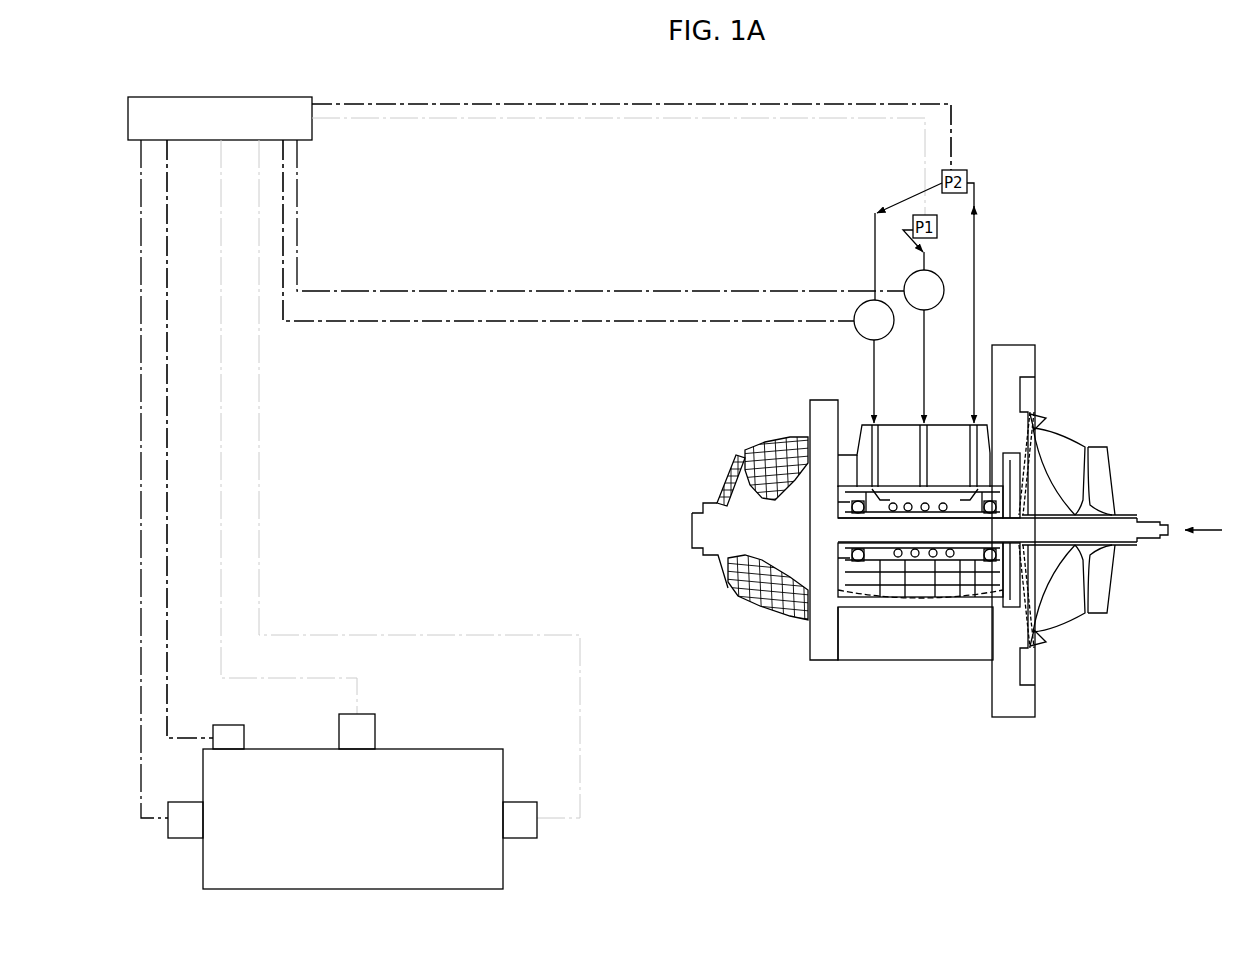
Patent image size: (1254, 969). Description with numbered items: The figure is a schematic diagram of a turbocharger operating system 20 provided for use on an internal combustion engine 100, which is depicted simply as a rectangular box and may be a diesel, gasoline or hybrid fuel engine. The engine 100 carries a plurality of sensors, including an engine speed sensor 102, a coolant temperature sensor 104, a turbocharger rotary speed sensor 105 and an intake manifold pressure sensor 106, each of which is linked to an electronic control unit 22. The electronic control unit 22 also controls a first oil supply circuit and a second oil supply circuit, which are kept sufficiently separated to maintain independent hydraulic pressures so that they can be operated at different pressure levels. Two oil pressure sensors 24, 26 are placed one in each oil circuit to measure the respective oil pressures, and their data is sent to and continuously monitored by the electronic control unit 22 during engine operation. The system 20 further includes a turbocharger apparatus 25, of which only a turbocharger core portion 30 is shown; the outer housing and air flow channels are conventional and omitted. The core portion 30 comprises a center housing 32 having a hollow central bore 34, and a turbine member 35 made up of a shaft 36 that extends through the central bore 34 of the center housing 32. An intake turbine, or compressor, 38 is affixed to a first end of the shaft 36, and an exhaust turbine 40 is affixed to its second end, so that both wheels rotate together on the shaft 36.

The turbocharger system 20 is at (1055, 275).
The electronic control unit 22 is at (265, 96).
The oil pressure sensor 24 is at (858, 336).
The turbocharger apparatus 25 is at (672, 540).
The oil pressure sensor 26 is at (935, 312).
The turbocharger core portion 30 is at (1085, 357).
The center housing 32 is at (1013, 531).
The hollow central bore 34 is at (830, 557).
The turbine member 35 is at (1218, 531).
The shaft 36 is at (1003, 530).
The intake turbine (compressor) 38 is at (1115, 478).
The exhaust turbine 40 is at (722, 480).
The internal combustion engine 100 is at (371, 836).
The engine speed sensor 102 is at (168, 818).
The coolant temperature sensor 104 is at (538, 818).
The turbocharger rotary speed sensor 105 is at (240, 738).
The intake manifold pressure sensor 106 is at (360, 713).